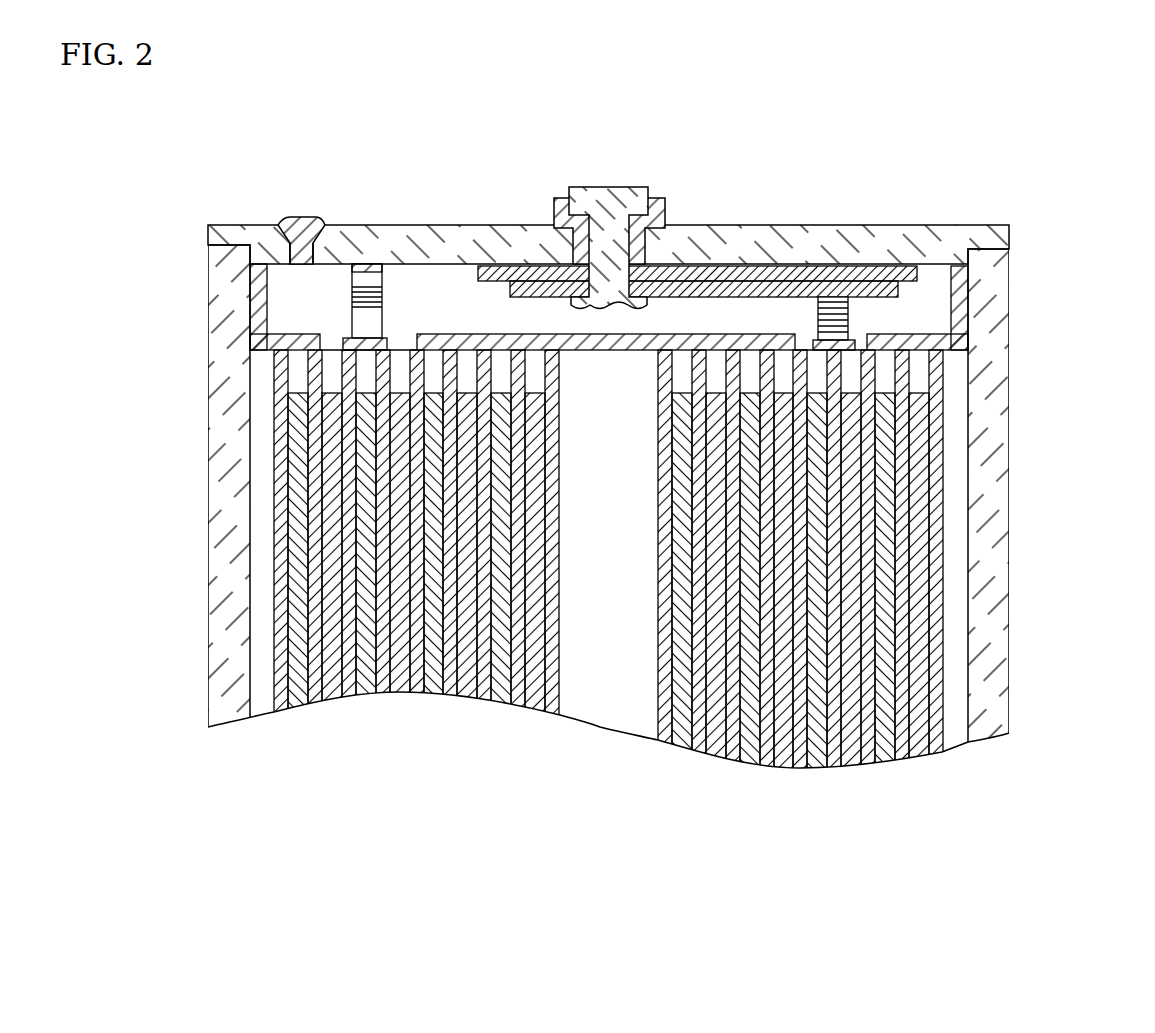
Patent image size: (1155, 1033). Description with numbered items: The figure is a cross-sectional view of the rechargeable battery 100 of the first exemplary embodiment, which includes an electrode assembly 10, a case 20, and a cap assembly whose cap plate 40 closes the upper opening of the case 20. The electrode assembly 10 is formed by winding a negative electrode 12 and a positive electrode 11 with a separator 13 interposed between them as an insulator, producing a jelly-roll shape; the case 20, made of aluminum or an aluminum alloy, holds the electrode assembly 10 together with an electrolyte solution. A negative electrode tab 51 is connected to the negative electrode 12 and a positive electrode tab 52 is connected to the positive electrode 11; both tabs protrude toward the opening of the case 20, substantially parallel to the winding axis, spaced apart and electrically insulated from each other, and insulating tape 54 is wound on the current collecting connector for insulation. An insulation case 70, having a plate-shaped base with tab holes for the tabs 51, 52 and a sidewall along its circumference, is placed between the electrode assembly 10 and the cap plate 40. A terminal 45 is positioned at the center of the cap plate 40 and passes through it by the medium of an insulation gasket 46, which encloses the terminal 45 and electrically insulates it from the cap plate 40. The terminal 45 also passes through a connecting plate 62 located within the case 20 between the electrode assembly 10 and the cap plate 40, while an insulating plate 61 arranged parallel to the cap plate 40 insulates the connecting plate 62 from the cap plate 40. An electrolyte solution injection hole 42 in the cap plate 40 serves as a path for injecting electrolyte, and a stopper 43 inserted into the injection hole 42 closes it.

The rechargeable battery 100 is at (446, 110).
The electrode assembly 10 is at (691, 571).
The positive electrode 11 is at (936, 580).
The negative electrode 12 is at (900, 626).
The separator 13 is at (1070, 652).
The case 20 is at (988, 386).
The cap plate 40 is at (950, 240).
The electrolyte solution injection hole 42 is at (290, 250).
The stopper 43 is at (299, 217).
The terminal 45 is at (618, 197).
The insulation gasket 46 is at (657, 200).
The negative electrode tab 51 is at (833, 317).
The positive electrode tab 52 is at (358, 310).
The insulating tape 54 is at (812, 338).
The insulating plate 61 is at (903, 275).
The connecting plate 62 is at (873, 288).
The insulation case 70 is at (958, 293).